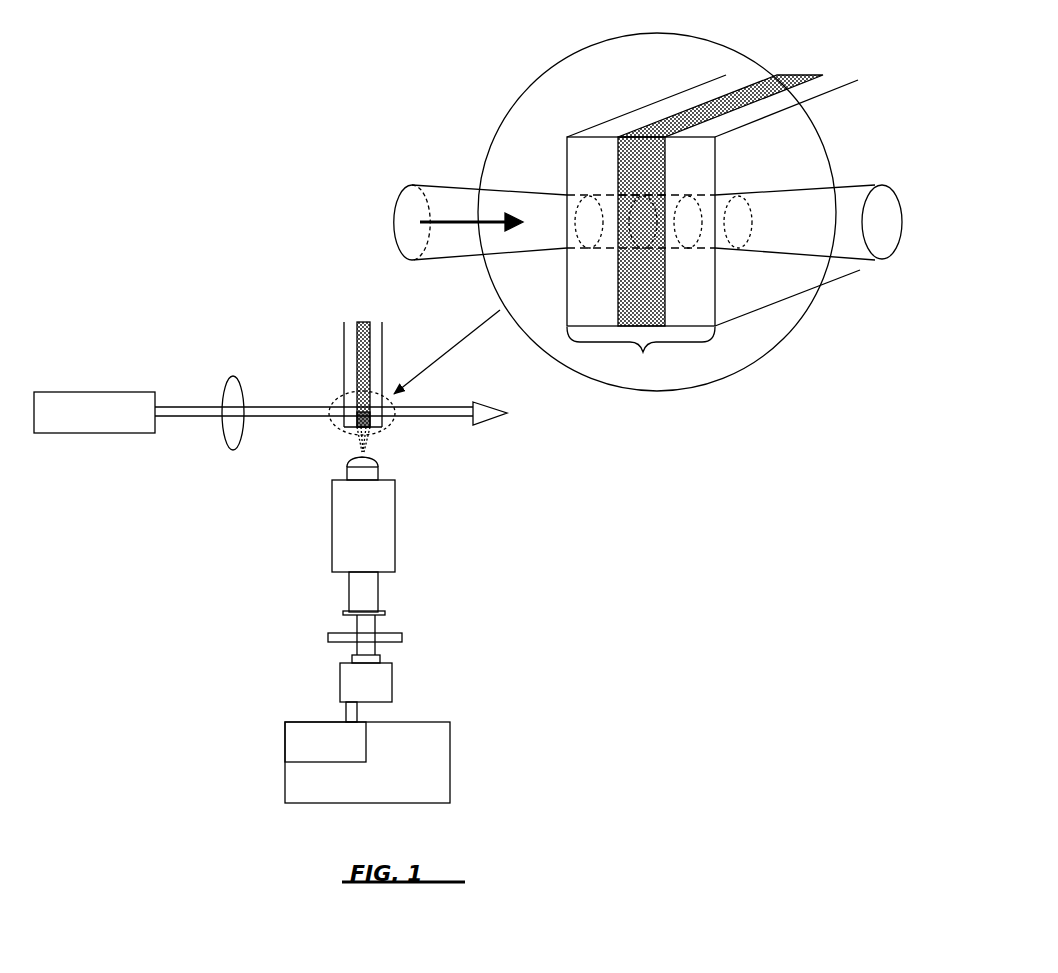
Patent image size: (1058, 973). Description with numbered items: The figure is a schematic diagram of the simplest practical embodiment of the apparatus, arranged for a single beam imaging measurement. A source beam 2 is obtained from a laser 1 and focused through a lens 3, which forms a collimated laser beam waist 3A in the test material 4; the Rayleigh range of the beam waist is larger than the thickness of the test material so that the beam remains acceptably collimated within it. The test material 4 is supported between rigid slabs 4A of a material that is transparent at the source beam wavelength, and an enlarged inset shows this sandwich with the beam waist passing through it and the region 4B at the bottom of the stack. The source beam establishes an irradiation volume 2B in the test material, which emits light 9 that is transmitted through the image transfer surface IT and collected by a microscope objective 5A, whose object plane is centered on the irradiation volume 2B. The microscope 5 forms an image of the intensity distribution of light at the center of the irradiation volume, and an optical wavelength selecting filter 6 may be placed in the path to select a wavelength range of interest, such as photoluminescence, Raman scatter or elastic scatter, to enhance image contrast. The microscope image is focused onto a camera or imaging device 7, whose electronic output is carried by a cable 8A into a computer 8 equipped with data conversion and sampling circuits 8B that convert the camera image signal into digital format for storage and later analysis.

The laser 1 is at (94, 412).
The source beam 2 is at (331, 402).
The lens 3 is at (233, 428).
The collimated laser beam waist 3A is at (738, 192).
The test material 4 is at (659, 312).
The rigid slabs 4A is at (377, 318).
The light exit portion 4B is at (373, 429).
The irradiation volume 2B is at (656, 240).
The microscope 5 is at (363, 567).
The microscope objective 5A is at (386, 470).
The optical wavelength selecting filter 6 is at (376, 637).
The camera or imaging device 7 is at (366, 678).
The computer 8 is at (367, 762).
The cable 8A is at (343, 712).
The data conversion and sampling circuits 8B is at (325, 742).
The light 9 is at (356, 444).
The image transfer surface IT is at (645, 358).